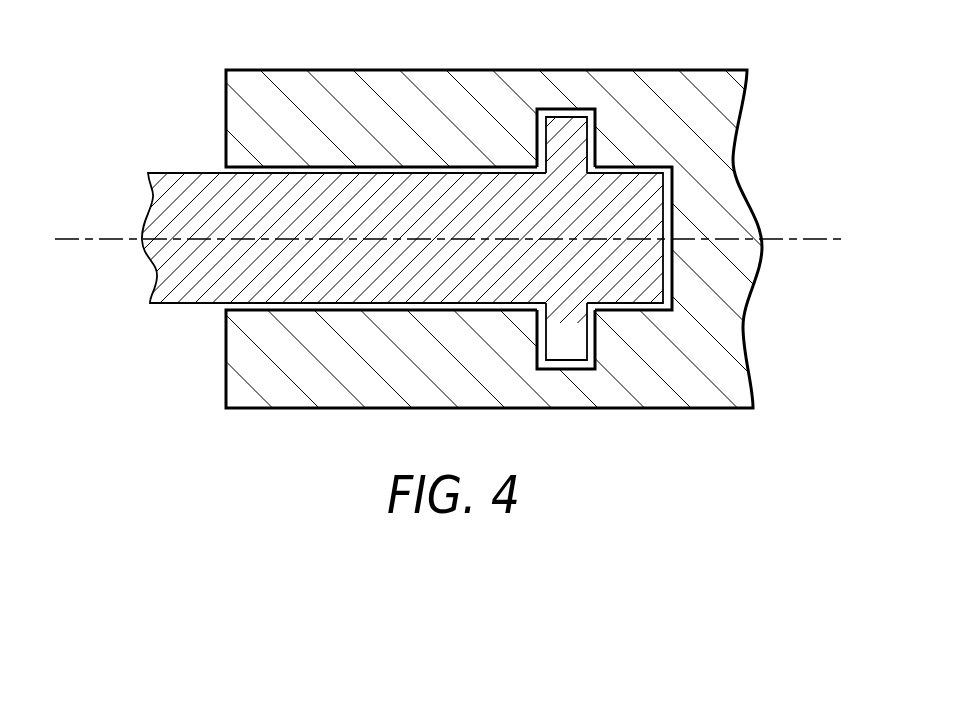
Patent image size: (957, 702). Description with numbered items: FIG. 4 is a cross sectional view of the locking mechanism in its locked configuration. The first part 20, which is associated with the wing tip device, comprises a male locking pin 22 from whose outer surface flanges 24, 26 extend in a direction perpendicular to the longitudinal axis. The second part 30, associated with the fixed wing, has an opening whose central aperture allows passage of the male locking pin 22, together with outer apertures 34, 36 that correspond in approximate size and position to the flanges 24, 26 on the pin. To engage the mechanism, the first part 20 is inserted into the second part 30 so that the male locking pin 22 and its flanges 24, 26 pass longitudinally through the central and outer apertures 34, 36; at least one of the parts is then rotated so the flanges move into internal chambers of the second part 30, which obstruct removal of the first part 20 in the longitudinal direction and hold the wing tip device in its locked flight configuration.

The first part 20 is at (478, 227).
The male locking pin 22 is at (187, 292).
The flange 24 is at (572, 347).
The flange 26 is at (572, 130).
The second part 30 is at (478, 351).
The outer aperture 34 is at (547, 372).
The outer aperture 36 is at (548, 110).